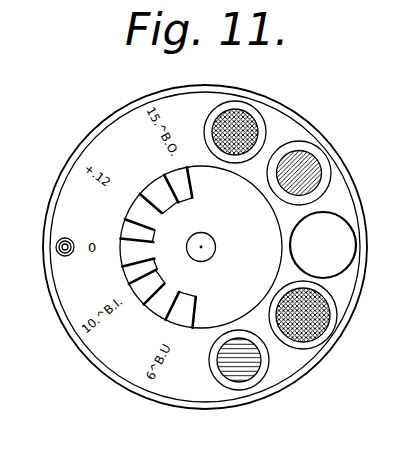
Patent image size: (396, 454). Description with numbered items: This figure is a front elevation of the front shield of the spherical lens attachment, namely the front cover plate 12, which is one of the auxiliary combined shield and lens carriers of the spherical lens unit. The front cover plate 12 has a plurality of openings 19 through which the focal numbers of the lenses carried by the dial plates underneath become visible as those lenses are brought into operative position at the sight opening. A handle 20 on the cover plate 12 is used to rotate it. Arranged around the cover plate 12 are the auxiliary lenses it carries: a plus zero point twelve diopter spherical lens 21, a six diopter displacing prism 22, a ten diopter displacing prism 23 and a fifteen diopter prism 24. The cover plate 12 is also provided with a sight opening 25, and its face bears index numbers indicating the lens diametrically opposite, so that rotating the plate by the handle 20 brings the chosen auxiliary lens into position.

The front cover plate 12 is at (205, 247).
The openings 19 is at (168, 203).
The handle 20 is at (63, 243).
The spherical lens 21 is at (313, 327).
The displacing prism 22 is at (243, 120).
The displacing prism 23 is at (308, 173).
The prism 24 is at (250, 370).
The sight opening 25 is at (323, 245).